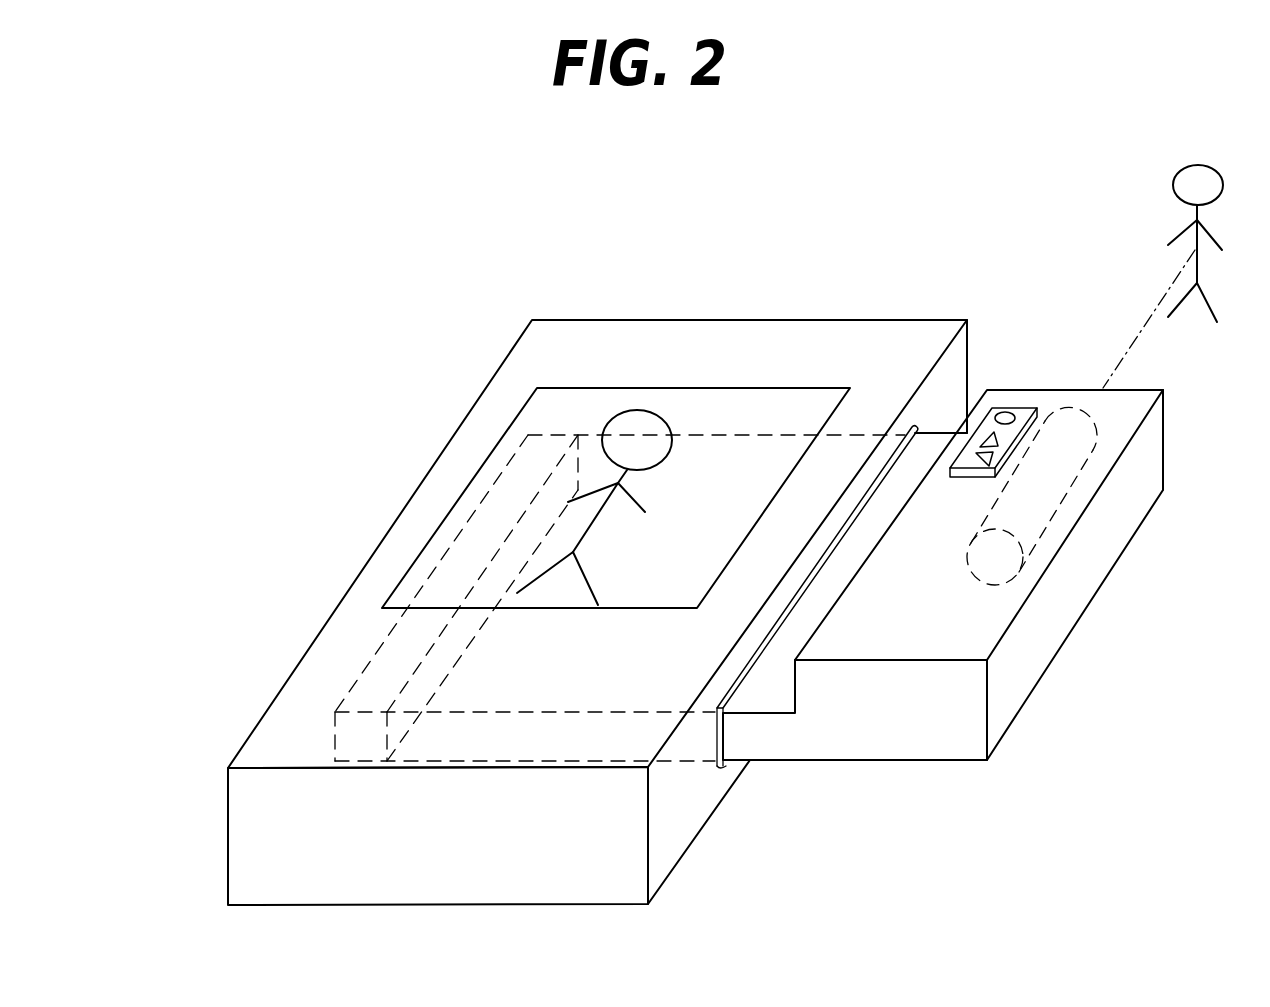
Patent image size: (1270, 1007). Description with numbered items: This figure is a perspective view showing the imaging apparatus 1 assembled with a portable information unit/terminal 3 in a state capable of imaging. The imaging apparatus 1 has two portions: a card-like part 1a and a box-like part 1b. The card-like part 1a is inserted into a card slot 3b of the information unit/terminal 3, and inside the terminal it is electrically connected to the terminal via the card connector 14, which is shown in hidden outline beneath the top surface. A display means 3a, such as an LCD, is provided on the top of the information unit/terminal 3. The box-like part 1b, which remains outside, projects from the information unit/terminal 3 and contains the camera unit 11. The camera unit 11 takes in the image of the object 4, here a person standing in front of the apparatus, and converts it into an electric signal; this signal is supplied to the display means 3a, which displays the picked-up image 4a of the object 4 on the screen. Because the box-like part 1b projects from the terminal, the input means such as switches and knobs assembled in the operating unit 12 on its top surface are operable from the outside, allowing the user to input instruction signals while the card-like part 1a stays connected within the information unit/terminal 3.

The imaging apparatus 1 is at (897, 742).
The card-like part 1a is at (778, 440).
The box-like part 1b is at (1127, 420).
The information unit/terminal 3 is at (538, 349).
The display means 3a is at (687, 410).
The card slot 3b is at (913, 427).
The object 4 is at (1218, 200).
The picked-up image 4a is at (647, 455).
The camera unit 11 is at (1063, 538).
The operating unit 12 is at (1024, 407).
The card connector 14 is at (435, 570).